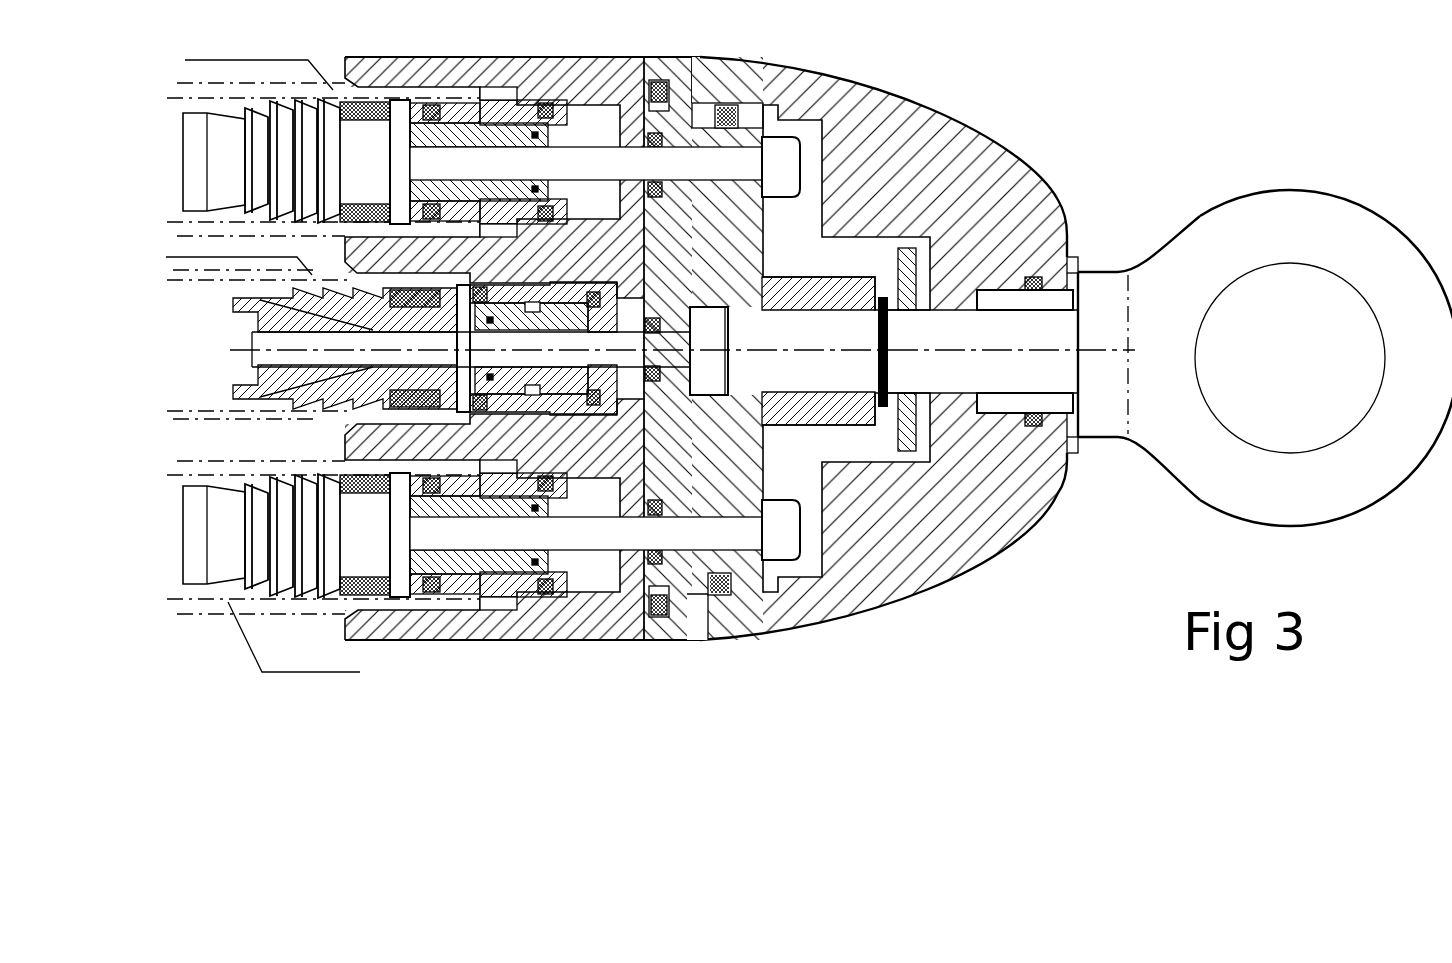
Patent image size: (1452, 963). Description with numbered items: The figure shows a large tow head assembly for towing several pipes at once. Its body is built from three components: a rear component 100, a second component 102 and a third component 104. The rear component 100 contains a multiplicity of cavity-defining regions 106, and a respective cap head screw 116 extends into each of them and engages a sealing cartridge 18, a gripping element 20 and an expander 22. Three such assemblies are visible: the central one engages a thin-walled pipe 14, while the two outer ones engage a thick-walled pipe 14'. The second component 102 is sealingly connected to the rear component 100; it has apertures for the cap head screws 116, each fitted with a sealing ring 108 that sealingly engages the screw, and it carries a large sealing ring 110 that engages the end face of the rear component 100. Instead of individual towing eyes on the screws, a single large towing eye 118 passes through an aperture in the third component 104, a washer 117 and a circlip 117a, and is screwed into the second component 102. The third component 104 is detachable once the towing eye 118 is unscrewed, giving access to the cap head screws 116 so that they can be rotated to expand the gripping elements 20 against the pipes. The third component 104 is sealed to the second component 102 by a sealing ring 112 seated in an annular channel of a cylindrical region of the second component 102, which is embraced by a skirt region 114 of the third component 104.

The thin-walled pipe 14 is at (428, 350).
The thick-walled pipe 14' is at (323, 344).
The sealing cartridge 18 is at (490, 608).
The gripping element 20 is at (295, 600).
The expander 22 is at (218, 582).
The rear component 100 is at (560, 640).
The second component 102 is at (662, 641).
The third component 104 is at (795, 636).
The cavity-defining region 106 is at (592, 283).
The sealing ring 108 is at (658, 128).
The large sealing ring 110 is at (652, 617).
The sealing ring 112 is at (718, 597).
The skirt region 114 is at (736, 632).
The cap head screw 116 is at (782, 190).
The washer 117 is at (897, 450).
The circlip 117a is at (878, 377).
The towing eye 118 is at (1210, 506).